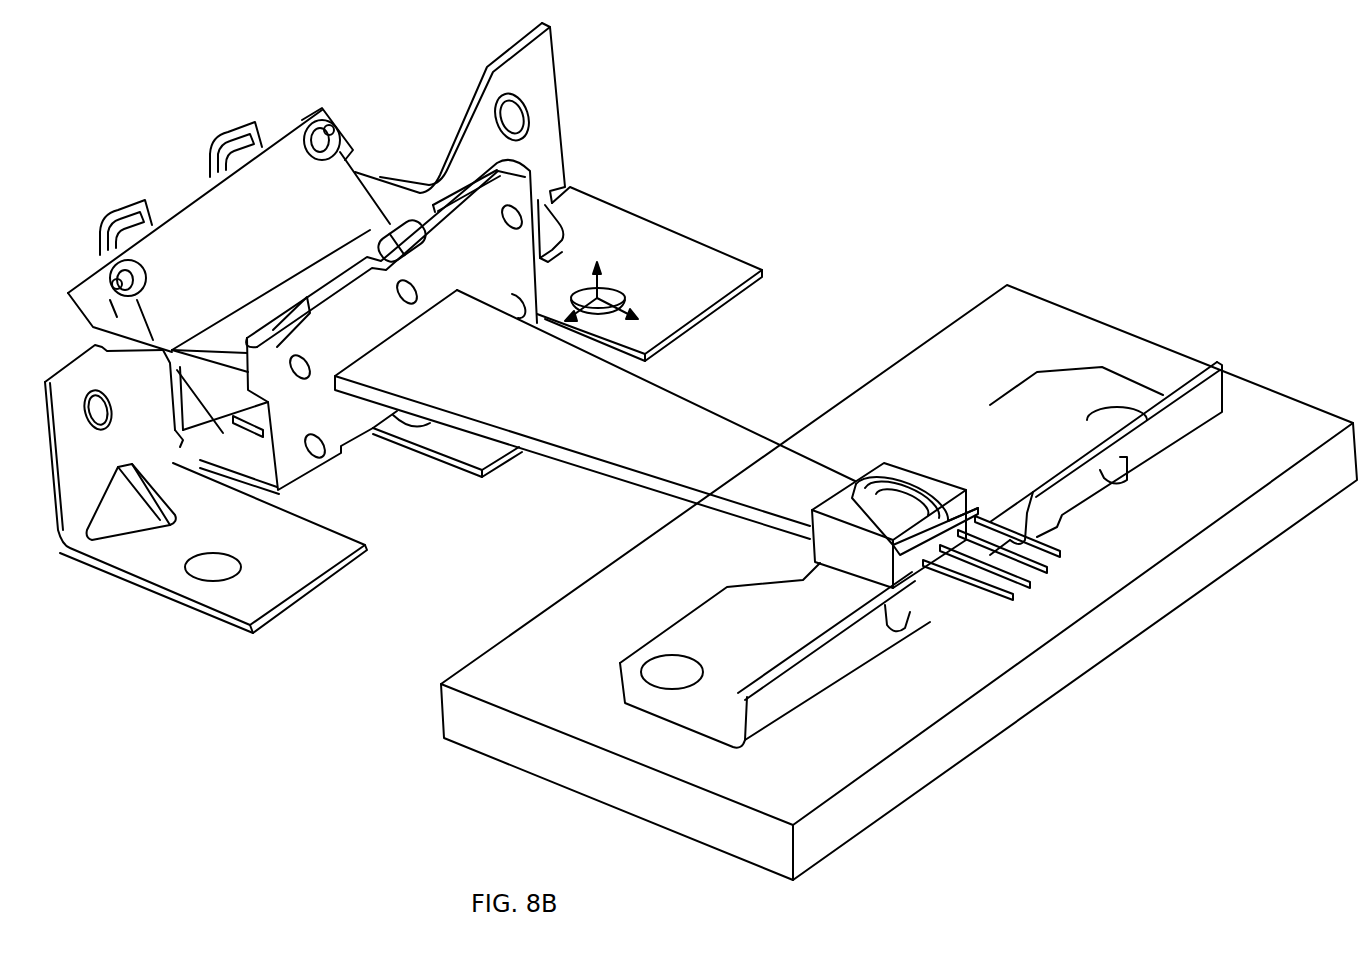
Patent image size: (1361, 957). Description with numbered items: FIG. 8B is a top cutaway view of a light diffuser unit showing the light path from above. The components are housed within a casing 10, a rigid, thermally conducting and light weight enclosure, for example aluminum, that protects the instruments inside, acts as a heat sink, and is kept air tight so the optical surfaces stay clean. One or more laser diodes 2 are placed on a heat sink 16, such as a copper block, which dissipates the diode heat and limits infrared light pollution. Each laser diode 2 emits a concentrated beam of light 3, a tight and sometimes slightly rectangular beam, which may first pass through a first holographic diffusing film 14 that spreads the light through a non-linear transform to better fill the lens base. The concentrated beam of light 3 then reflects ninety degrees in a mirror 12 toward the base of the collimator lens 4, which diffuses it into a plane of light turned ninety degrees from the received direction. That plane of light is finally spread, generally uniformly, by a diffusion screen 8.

The laser diode 2 is at (990, 600).
The concentrated beam of light 3 is at (723, 407).
The collimator lens 4 is at (410, 125).
The diffusion screen 8 is at (1155, 340).
The casing 10 is at (887, 190).
The mirror 12 is at (356, 237).
The first holographic diffusing film 14 is at (575, 192).
The heat sink 16 is at (910, 372).